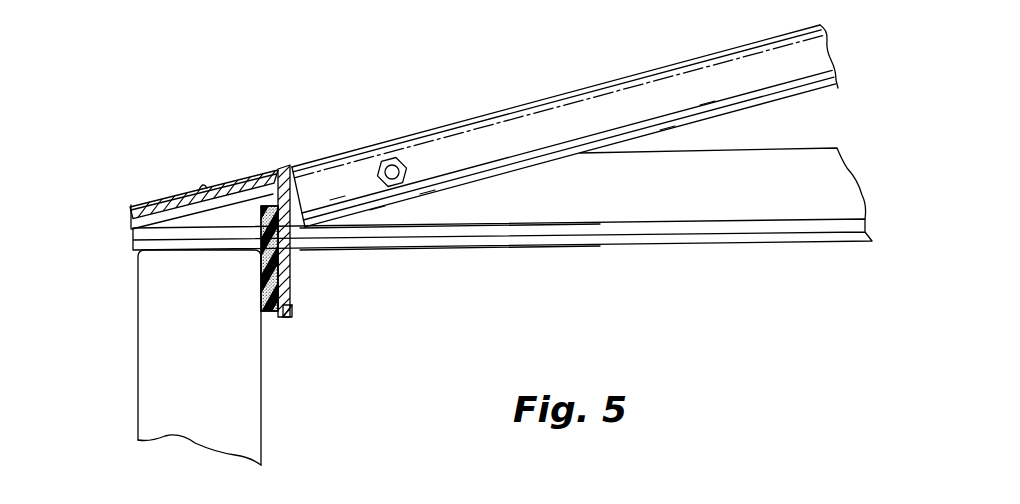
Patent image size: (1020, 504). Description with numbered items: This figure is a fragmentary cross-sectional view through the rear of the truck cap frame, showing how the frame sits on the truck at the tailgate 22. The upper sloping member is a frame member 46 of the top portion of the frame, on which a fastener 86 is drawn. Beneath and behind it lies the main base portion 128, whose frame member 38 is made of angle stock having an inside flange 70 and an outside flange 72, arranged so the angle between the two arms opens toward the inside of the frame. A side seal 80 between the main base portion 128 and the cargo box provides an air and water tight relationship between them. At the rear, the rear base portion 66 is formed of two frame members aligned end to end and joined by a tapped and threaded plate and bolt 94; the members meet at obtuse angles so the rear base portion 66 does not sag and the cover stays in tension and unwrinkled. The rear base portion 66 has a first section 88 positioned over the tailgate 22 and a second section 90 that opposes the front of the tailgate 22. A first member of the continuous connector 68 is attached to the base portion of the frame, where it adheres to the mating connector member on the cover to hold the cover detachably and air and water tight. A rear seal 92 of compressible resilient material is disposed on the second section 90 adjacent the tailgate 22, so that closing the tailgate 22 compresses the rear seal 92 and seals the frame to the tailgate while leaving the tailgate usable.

The tailgate 22 is at (163, 351).
The frame member 38 is at (655, 192).
The frame member 46 is at (622, 103).
The rear base portion 66 is at (281, 168).
The first member of the continuous connector 68 is at (217, 181).
The inside flange 70 is at (472, 226).
The outside flange 72 is at (718, 185).
The side seal 80 is at (616, 240).
The nut 86 is at (392, 156).
The first section 88 is at (150, 207).
The second section 90 is at (292, 304).
The rear seal 92 is at (273, 313).
The tapped and threaded plate and bolt 94 is at (132, 229).
The main base portion 128 is at (736, 169).